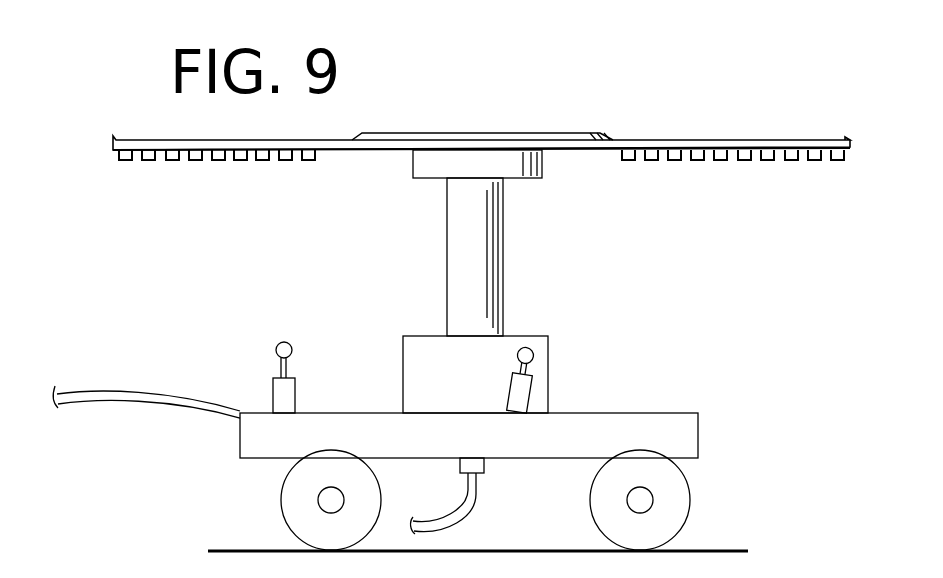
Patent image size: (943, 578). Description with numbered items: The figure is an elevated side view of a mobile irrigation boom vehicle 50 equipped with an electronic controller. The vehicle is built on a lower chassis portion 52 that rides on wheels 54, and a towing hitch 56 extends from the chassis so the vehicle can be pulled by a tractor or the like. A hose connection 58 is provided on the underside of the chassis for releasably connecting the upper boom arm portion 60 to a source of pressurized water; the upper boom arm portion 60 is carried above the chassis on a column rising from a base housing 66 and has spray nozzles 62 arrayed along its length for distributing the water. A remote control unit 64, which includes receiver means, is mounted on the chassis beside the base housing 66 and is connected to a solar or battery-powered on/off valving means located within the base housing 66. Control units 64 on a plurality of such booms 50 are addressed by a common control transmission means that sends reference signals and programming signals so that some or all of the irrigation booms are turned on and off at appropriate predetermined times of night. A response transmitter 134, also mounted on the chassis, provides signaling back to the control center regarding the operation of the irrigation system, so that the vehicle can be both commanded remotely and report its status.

The mobile irrigation boom vehicle 50 is at (440, 262).
The lower chassis portion 52 is at (684, 431).
The wheels 54 is at (327, 500).
The towing hitch 56 is at (114, 402).
The hose connection 58 is at (474, 506).
The upper boom arm portion 60 is at (682, 140).
The spray nozzles 62 is at (790, 162).
The remote control unit 64 is at (518, 393).
The base housing 66 is at (417, 375).
The response transmitter 134 is at (285, 397).